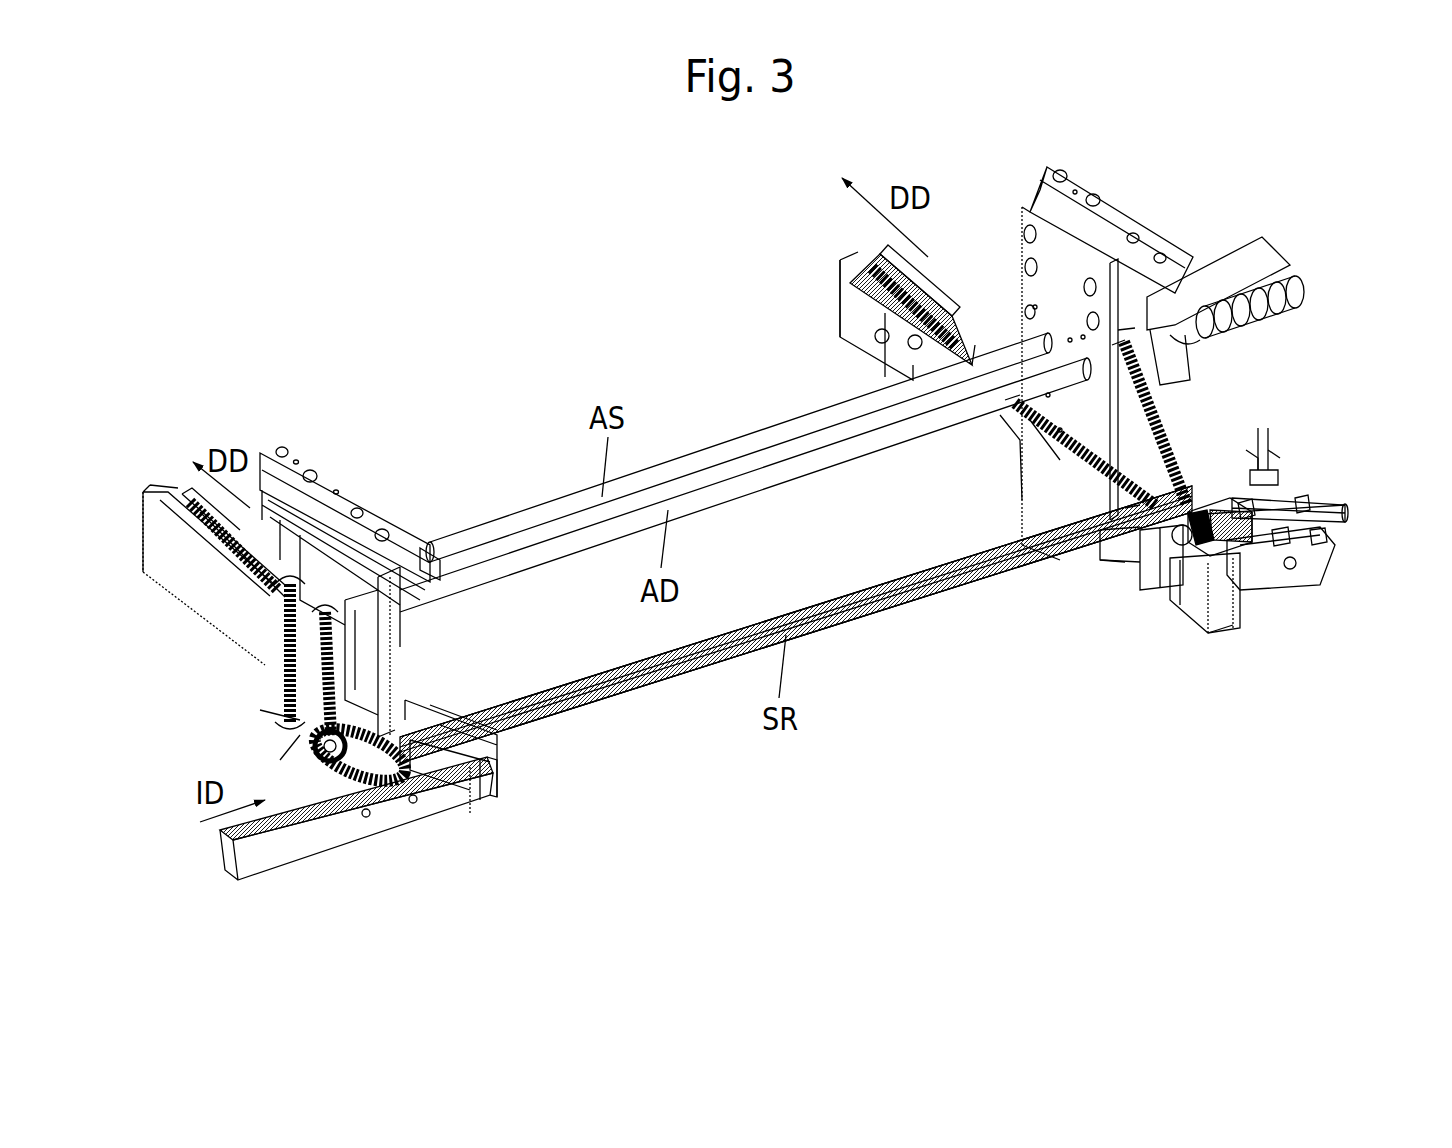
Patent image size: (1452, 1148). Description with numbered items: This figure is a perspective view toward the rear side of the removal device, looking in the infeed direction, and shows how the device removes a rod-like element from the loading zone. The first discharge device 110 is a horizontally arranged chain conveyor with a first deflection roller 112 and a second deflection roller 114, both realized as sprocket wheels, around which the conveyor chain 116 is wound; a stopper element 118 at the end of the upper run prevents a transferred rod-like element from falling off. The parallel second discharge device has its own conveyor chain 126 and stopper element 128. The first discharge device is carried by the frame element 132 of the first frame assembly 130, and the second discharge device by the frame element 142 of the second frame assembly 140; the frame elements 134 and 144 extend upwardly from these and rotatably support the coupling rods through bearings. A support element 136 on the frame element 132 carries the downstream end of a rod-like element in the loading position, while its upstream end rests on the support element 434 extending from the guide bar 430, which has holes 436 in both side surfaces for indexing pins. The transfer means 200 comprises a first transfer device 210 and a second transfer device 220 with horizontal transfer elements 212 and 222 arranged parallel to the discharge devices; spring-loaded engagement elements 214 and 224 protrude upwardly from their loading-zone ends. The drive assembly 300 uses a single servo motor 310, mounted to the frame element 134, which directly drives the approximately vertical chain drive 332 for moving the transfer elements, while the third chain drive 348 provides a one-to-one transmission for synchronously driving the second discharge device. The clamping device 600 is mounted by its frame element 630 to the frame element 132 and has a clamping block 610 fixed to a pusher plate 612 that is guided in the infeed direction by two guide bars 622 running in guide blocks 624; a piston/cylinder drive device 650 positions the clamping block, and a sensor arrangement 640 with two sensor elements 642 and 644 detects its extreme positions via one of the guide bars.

The first discharge device 110 is at (716, 250).
The first deflection roller 112 is at (1037, 460).
The second deflection roller 114 is at (843, 273).
The conveyor chain 116 is at (910, 337).
The stopper element 118 is at (880, 330).
The conveyor chain 126 is at (270, 587).
The stopper element 128 is at (192, 503).
The first frame assembly 130 is at (960, 155).
The frame element 132 is at (958, 307).
The frame element 134 is at (1030, 210).
The support element 136 is at (1180, 547).
The second frame assembly 140 is at (125, 405).
The frame element 142 is at (172, 563).
The frame element 144 is at (375, 652).
The transfer means 200 is at (1108, 735).
The first transfer device 210 is at (1000, 705).
The transfer element 212 is at (1133, 513).
The engagement element 214 is at (1137, 530).
The second transfer device 220 is at (706, 788).
The transfer element 222 is at (470, 733).
The engagement element 224 is at (490, 757).
The drive assembly 300 is at (1306, 190).
The servo motor 310 is at (1258, 249).
The chain drive 332 is at (278, 683).
The third chain drive 348 is at (312, 732).
The guide bar 430 is at (305, 838).
The support element 434 is at (498, 790).
The holes 436 is at (413, 802).
The clamping device 600 is at (1340, 360).
The clamping block 610 is at (1212, 520).
The pusher plate 612 is at (1257, 570).
The guide bars 622 is at (1300, 503).
The guide blocks 624 is at (1243, 507).
The frame element 630 is at (1253, 593).
The sensor arrangement 640 is at (1270, 415).
The sensor element 642 is at (1250, 455).
The sensor element 644 is at (1280, 450).
The drive device 650 is at (1303, 518).